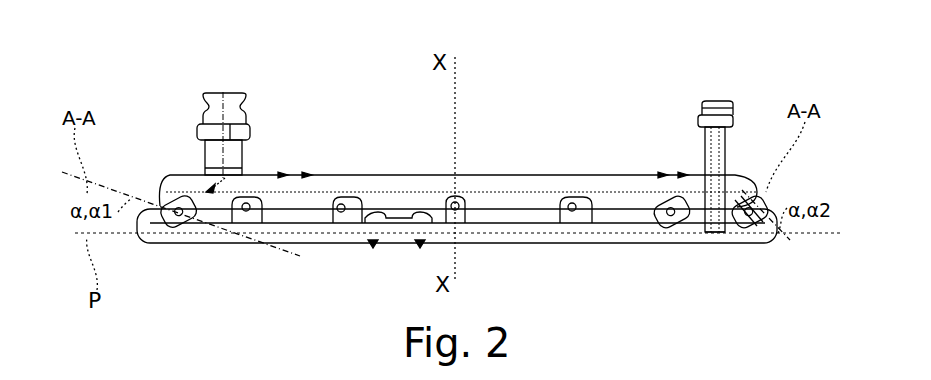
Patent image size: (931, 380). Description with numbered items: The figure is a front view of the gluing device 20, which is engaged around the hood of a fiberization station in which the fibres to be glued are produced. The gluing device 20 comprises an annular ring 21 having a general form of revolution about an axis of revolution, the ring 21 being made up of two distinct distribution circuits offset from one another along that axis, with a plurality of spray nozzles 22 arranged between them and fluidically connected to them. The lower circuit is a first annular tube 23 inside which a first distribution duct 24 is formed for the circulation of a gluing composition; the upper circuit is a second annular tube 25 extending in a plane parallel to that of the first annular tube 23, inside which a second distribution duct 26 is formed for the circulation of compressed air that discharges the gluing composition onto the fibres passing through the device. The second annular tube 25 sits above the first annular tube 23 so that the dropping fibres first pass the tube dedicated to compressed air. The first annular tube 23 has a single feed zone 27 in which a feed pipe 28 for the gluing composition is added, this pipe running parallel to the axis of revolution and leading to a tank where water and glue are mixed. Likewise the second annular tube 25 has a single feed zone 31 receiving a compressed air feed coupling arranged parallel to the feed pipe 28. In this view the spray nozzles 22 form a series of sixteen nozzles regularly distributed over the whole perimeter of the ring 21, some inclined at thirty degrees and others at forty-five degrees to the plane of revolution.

The gluing device 20 is at (457, 270).
The annular ring 21 is at (341, 256).
The spray nozzles 22 is at (553, 248).
The first annular tube 23 is at (464, 259).
The first distribution duct 24 is at (640, 242).
The second annular tube 25 is at (769, 177).
The second distribution duct 26 is at (742, 182).
The feed zone 27 is at (717, 252).
The feed pipe 28 is at (718, 96).
The feed zone 31 is at (201, 93).